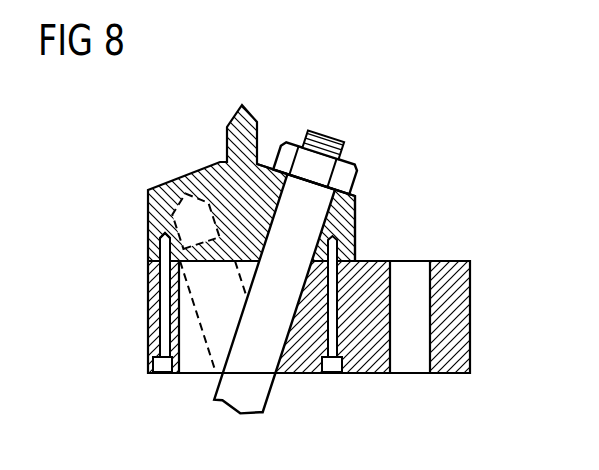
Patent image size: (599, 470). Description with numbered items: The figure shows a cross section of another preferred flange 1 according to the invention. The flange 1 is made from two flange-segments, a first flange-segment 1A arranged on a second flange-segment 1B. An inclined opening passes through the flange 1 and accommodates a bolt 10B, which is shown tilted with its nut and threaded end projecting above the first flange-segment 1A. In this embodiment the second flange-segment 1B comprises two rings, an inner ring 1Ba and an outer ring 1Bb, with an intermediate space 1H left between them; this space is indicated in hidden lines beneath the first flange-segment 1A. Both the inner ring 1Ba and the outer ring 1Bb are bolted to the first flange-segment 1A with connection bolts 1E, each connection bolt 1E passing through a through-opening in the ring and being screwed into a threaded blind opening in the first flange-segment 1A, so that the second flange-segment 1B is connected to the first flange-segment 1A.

The flange 1 is at (134, 154).
The first flange-segment 1A is at (204, 176).
The second flange-segment 1B is at (471, 277).
The inner ring 1Ba is at (381, 376).
The outer ring 1Bb is at (148, 354).
The connection bolt 1E is at (150, 283).
The intermediate space 1H is at (199, 376).
The bolt 10B is at (330, 140).